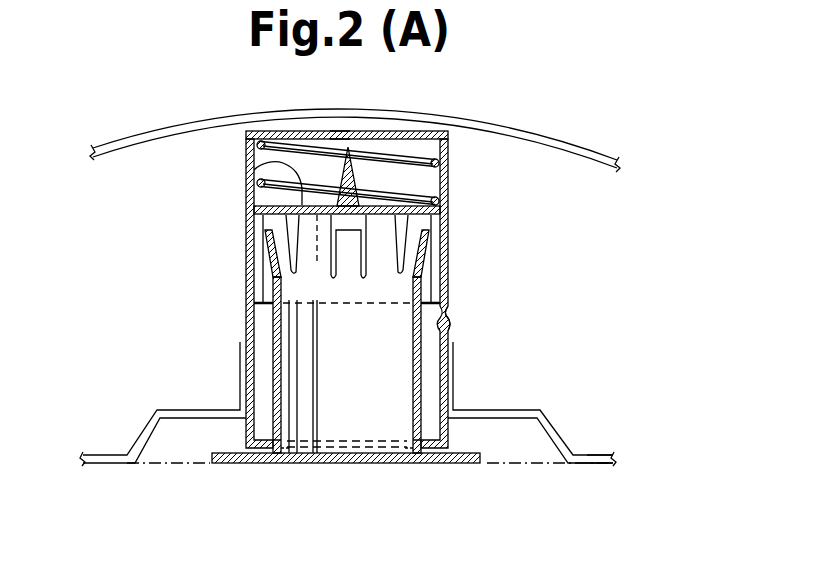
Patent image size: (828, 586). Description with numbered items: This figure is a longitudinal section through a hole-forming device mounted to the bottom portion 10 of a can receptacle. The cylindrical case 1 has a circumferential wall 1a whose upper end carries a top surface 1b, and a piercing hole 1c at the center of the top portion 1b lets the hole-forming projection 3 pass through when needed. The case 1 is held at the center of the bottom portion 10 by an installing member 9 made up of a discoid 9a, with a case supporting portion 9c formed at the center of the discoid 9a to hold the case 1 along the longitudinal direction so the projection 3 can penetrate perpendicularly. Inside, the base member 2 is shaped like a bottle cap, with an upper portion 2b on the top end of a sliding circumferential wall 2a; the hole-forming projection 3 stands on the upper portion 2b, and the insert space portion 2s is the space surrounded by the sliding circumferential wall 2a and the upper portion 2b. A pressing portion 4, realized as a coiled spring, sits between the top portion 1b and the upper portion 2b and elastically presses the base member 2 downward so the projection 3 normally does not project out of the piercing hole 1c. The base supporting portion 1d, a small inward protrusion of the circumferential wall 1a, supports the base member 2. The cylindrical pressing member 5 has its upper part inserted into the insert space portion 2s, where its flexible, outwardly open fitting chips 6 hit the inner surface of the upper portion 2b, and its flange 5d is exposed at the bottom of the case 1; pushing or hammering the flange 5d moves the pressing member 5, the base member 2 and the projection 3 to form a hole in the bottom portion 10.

The case 1 is at (450, 247).
The circumferential wall 1a is at (253, 252).
The top surface 1b is at (405, 132).
The piercing hole 1c is at (340, 134).
The base supporting portion 1d is at (450, 318).
The base member 2 is at (272, 312).
The sliding circumferential wall 2a is at (255, 294).
The upper portion 2b is at (254, 170).
The insert space portion 2s is at (377, 243).
The hole-forming projection 3 is at (366, 170).
The pressing portion 4 is at (410, 168).
The pressing member 5 is at (423, 391).
The flange 5d is at (478, 465).
The fitting chips 6 is at (283, 245).
The installing member 9 is at (538, 414).
The discoid 9a is at (588, 449).
The case supporting portion 9c is at (240, 391).
The bottom portion 10 is at (137, 156).